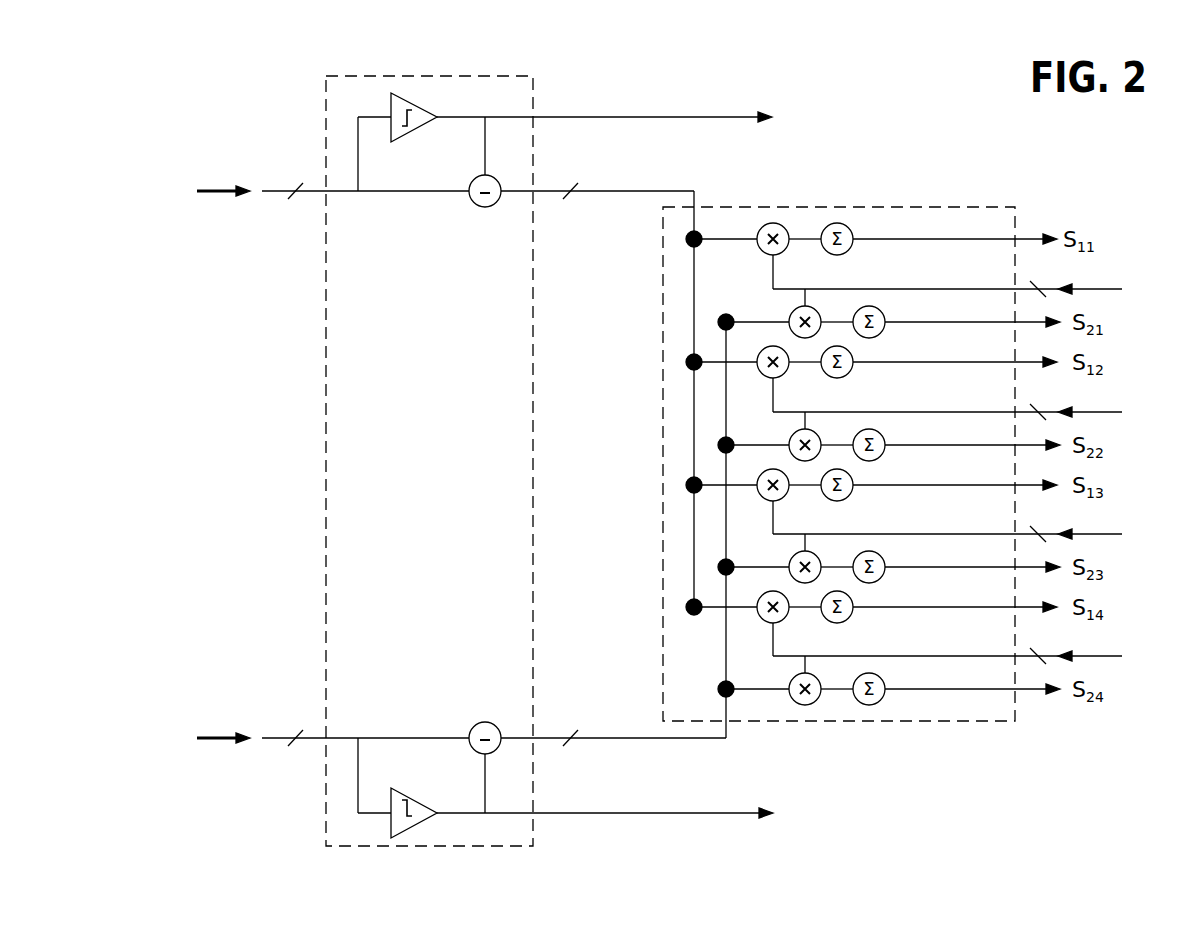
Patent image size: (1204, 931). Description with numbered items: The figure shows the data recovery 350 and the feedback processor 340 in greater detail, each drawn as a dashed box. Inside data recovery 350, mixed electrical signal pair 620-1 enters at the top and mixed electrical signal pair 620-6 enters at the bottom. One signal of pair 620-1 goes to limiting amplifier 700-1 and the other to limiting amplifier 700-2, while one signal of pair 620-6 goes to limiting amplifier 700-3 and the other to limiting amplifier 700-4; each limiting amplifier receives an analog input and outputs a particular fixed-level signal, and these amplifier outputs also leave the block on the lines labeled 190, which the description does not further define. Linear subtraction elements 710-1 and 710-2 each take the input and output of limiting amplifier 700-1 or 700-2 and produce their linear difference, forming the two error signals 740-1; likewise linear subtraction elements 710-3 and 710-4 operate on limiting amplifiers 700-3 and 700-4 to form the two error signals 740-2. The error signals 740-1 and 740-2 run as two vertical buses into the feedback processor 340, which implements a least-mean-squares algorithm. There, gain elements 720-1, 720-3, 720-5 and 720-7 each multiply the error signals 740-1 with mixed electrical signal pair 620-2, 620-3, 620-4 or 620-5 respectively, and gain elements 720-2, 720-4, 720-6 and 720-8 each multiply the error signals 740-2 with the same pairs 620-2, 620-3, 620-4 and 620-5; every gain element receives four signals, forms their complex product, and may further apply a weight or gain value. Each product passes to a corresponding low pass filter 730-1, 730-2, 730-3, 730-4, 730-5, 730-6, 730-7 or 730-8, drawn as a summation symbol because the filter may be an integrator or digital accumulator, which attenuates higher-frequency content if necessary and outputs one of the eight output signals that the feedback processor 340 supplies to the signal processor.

The data recovery 350 is at (326, 108).
The feedback processor 340 is at (862, 207).
The output signal 190 is at (673, 116).
The mixed electrical signal pair 620-1 is at (415, 199).
The mixed electrical signal pair 620-2 is at (976, 286).
The mixed electrical signal pair 620-3 is at (976, 409).
The mixed electrical signal pair 620-4 is at (976, 532).
The mixed electrical signal pair 620-5 is at (976, 654).
The mixed electrical signal pair 620-6 is at (431, 747).
The limiting amplifier 700-1 is at (400, 95).
The limiting amplifier 700-2 is at (422, 114).
The limiting amplifier 700-3 is at (420, 780).
The limiting amplifier 700-4 is at (421, 788).
The linear subtraction element 710-1 is at (477, 204).
The linear subtraction element 710-2 is at (443, 182).
The linear subtraction element 710-3 is at (478, 725).
The linear subtraction element 710-4 is at (443, 746).
The error signals 740-1 is at (609, 193).
The error signals 740-2 is at (638, 738).
The gain element 720-1 is at (763, 229).
The gain element 720-2 is at (794, 312).
The gain element 720-3 is at (782, 372).
The gain element 720-4 is at (795, 436).
The gain element 720-5 is at (782, 495).
The gain element 720-6 is at (795, 558).
The gain element 720-7 is at (782, 617).
The gain element 720-8 is at (795, 680).
The low pass filter 730-1 is at (849, 248).
The low pass filter 730-2 is at (881, 332).
The low pass filter 730-3 is at (847, 372).
The low pass filter 730-4 is at (878, 455).
The low pass filter 730-5 is at (847, 495).
The low pass filter 730-6 is at (878, 577).
The low pass filter 730-7 is at (847, 617).
The low pass filter 730-8 is at (878, 699).